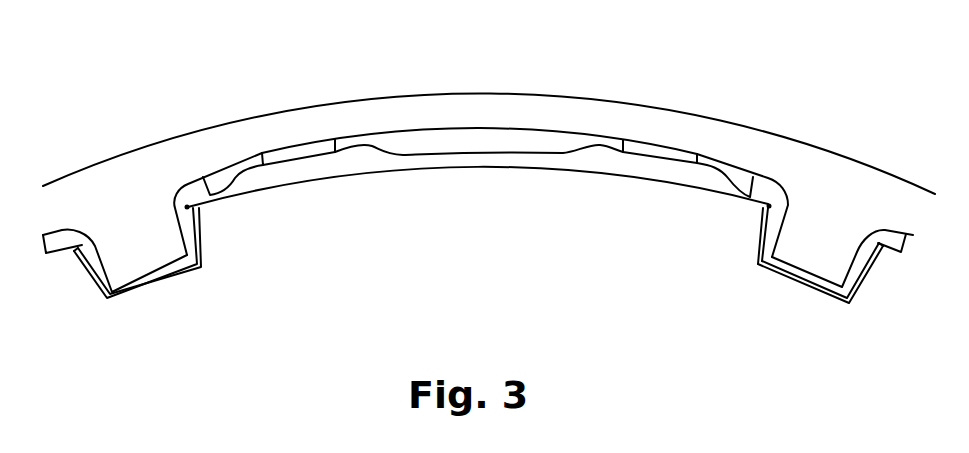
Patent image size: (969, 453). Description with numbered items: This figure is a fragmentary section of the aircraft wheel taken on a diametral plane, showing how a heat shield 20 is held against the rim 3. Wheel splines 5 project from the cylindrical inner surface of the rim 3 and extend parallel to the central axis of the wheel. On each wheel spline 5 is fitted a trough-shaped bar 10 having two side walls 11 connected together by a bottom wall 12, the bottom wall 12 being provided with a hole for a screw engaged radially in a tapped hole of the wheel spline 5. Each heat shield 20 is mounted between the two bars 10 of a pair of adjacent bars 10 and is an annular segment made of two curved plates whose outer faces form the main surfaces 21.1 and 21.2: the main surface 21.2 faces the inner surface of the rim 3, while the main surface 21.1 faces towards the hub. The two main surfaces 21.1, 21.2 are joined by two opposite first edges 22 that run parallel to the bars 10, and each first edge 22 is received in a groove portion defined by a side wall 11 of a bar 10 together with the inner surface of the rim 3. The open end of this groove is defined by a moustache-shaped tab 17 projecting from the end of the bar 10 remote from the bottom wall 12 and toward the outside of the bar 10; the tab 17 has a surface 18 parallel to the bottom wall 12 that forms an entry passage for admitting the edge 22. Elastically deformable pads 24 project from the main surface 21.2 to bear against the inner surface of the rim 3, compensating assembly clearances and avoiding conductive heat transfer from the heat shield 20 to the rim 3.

The rim 3 is at (88, 177).
The wheel spline 5 is at (140, 243).
The bar 10 is at (152, 302).
The side wall 11 is at (855, 262).
The bottom wall 12 is at (783, 277).
The moustache-shaped tab 17 is at (888, 229).
The surface 18 is at (890, 255).
The heat shield 20 is at (480, 131).
The main surface 21.1 is at (330, 182).
The main surface 21.2 is at (387, 152).
The first edge 22 is at (187, 207).
The elastically deformable pad 24 is at (300, 146).